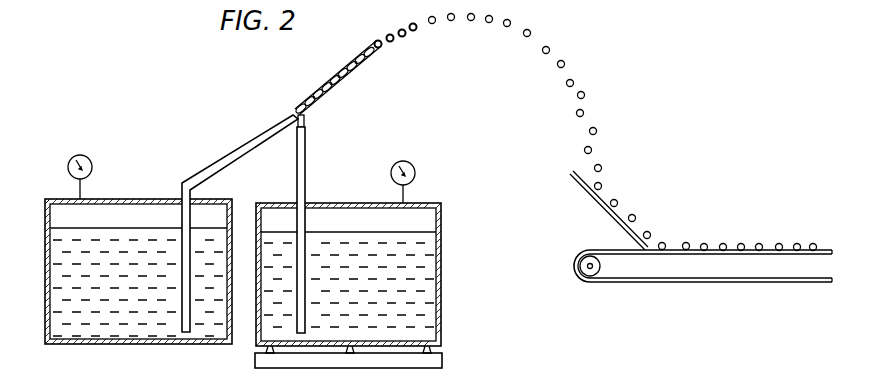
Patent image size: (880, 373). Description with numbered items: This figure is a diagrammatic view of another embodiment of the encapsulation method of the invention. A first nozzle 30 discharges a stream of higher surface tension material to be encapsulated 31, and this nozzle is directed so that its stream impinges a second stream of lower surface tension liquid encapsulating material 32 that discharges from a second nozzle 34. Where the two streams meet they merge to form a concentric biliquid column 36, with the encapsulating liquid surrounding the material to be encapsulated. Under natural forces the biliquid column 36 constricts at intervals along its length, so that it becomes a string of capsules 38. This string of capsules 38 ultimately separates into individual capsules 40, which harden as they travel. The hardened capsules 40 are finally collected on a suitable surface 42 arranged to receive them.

The first nozzle 30 is at (210, 167).
The higher surface tension material to be encapsulated 31 is at (137, 241).
The lower surface tension liquid encapsulating material 32 is at (374, 243).
The second nozzle 34 is at (306, 130).
The concentric biliquid column 36 is at (300, 104).
The string of capsules 38 is at (379, 54).
The individual capsules 40 is at (523, 34).
The surface 42 is at (596, 203).